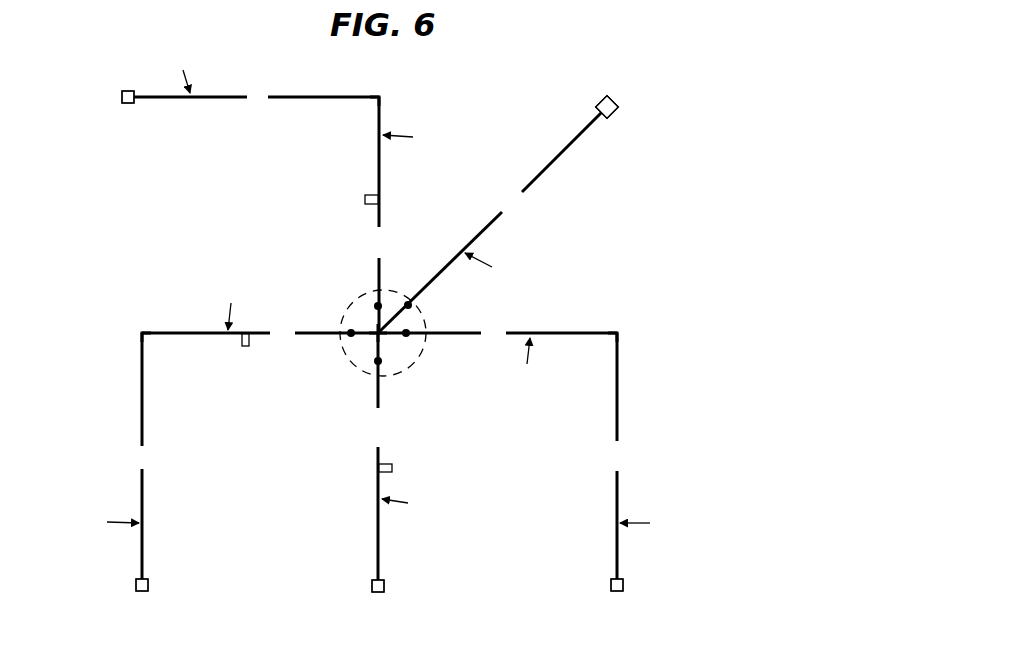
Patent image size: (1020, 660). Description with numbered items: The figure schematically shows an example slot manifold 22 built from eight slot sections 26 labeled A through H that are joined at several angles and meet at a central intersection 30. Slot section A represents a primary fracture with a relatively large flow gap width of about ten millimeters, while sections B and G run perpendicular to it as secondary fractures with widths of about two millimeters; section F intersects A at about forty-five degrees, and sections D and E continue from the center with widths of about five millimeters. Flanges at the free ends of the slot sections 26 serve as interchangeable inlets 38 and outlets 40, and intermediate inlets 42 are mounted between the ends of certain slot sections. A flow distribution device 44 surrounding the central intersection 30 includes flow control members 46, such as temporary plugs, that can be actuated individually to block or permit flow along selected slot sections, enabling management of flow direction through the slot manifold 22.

The slot manifold 22 is at (132, 191).
The slot sections 26 is at (312, 96).
The central intersection 30 is at (394, 96).
The inlets 38 is at (125, 92).
The outlets 40 is at (372, 341).
The intermediate inlets 42 is at (365, 200).
The flow distribution device 44 is at (345, 308).
The flow control members 46 is at (380, 305).